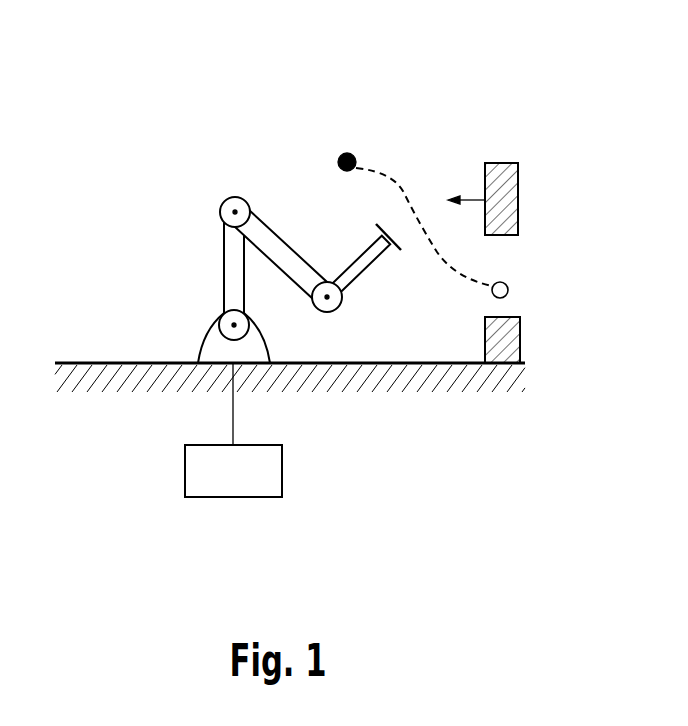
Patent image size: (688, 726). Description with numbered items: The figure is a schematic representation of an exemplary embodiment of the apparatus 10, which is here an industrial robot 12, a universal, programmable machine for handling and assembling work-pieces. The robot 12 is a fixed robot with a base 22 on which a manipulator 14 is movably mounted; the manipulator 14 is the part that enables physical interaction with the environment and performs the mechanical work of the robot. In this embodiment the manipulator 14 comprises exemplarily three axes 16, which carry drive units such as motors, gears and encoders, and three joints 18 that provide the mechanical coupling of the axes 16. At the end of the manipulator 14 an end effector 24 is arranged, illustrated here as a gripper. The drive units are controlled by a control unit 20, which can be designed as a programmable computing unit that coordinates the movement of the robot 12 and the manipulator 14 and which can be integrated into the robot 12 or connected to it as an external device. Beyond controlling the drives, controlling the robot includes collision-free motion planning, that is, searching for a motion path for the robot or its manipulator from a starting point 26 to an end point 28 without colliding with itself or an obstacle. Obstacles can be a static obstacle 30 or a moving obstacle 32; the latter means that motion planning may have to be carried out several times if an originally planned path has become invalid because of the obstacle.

The apparatus 10 is at (249, 93).
The industrial robot 12 is at (192, 211).
The manipulator 14 is at (228, 276).
The axes 16 is at (282, 240).
The joints 18 is at (230, 198).
The control unit 20 is at (236, 498).
The base 22 is at (254, 346).
The end effector 24 is at (402, 248).
The starting point 26 is at (509, 290).
The end point 28 is at (346, 152).
The static obstacle 30 is at (521, 338).
The moving obstacle 32 is at (519, 200).